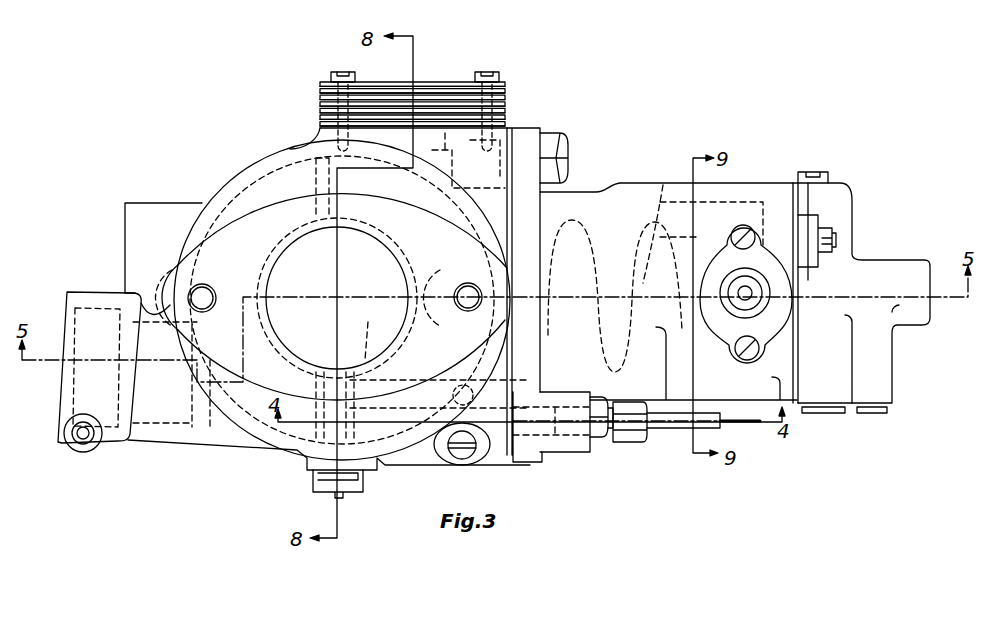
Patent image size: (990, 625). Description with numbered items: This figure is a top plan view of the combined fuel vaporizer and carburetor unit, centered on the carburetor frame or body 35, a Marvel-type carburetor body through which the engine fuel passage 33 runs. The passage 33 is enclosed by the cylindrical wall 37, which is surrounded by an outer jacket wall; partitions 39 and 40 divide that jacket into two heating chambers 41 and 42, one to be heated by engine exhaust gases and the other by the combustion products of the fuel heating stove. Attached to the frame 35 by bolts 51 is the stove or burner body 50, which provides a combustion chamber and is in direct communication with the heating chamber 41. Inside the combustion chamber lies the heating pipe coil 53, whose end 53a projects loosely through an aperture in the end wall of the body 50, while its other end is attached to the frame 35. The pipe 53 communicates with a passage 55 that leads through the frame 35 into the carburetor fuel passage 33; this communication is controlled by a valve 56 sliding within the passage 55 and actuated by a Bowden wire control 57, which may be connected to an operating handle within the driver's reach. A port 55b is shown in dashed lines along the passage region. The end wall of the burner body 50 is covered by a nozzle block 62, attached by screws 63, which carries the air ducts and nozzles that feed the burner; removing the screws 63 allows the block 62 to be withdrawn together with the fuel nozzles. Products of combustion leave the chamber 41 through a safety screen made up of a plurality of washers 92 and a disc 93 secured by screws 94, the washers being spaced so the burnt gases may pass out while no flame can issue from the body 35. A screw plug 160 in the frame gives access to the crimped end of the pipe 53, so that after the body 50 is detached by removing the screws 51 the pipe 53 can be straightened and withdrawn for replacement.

The engine fuel passage 33 is at (310, 268).
The carburetor frame or body 35 is at (461, 158).
The cylindrical wall 37 is at (398, 252).
The partition 39 is at (317, 382).
The partition 40 is at (351, 188).
The heating chamber 41 is at (452, 176).
The heating chamber 42 is at (295, 173).
The stove or burner body 50 is at (603, 190).
The bolt 51 is at (553, 147).
The heating pipe coil 53 is at (663, 185).
The end of heating pipe coil 53a is at (785, 212).
The passage 55 is at (405, 476).
The port 55b is at (484, 395).
The valve 56 is at (543, 428).
The Bowden wire control 57 is at (745, 423).
The nozzle block 62 is at (876, 270).
The screw 63 is at (836, 233).
The washer 92 is at (509, 120).
The disc 93 is at (432, 82).
The screw 94 is at (335, 72).
The screw plug 160 is at (463, 453).